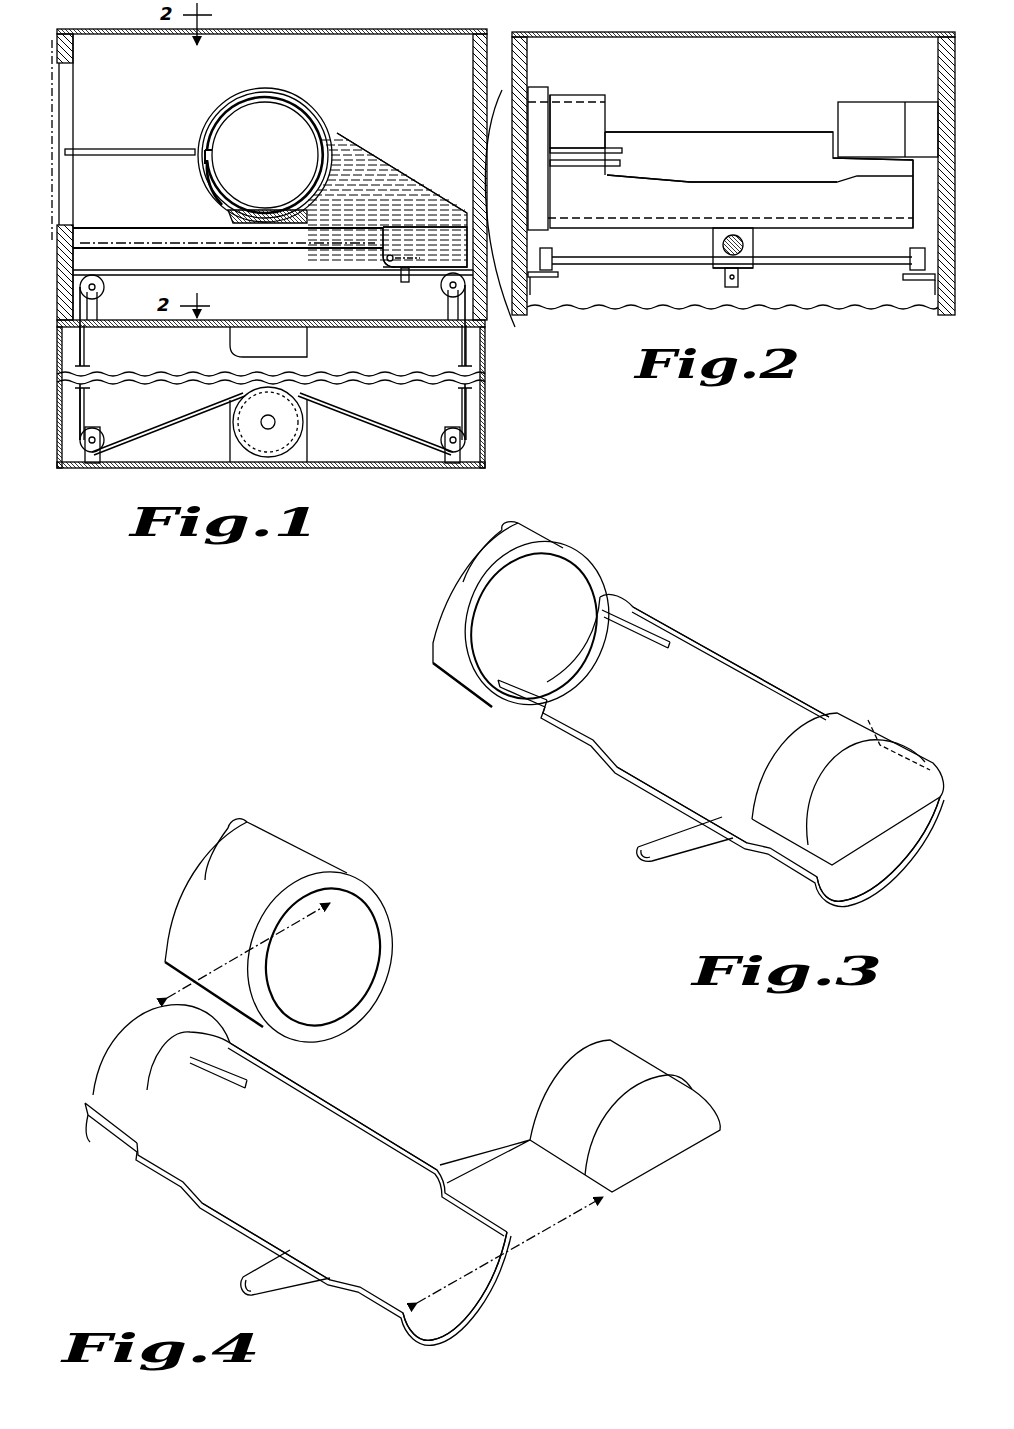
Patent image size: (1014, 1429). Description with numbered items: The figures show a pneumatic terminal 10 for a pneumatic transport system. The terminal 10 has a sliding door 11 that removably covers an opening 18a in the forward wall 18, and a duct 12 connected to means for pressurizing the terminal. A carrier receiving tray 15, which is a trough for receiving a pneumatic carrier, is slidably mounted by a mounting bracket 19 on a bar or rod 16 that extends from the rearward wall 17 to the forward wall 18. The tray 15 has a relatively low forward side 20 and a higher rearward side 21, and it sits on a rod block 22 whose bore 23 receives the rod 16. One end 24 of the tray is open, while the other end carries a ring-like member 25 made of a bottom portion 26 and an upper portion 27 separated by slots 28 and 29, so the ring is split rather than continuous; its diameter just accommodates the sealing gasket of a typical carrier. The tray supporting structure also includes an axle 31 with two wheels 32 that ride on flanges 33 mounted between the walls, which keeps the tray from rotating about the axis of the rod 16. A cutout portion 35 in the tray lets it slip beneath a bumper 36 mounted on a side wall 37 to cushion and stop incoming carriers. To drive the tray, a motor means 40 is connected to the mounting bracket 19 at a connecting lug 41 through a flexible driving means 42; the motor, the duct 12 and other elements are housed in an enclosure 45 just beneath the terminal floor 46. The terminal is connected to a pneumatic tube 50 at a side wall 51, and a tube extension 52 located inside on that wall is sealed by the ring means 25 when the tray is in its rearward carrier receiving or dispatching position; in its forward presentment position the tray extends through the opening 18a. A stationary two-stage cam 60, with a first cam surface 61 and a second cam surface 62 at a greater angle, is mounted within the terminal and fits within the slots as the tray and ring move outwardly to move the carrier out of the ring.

In FIG. 1, the pneumatic terminal 10 is at (400, 27).
In FIG. 2, the pneumatic terminal 10 is at (804, 27).
In FIG. 1, the sliding door 11 is at (55, 57).
In FIG. 1, the duct 12 is at (307, 338).
In FIG. 1, the carrier receiving tray 15 is at (229, 212).
In FIG. 2, the carrier receiving tray 15 is at (684, 208).
In FIG. 3, the carrier receiving tray 15 is at (743, 656).
In FIG. 4, the carrier receiving tray 15 is at (365, 1106).
In FIG. 1, the bar or rod 16 is at (172, 228).
In FIG. 2, the bar or rod 16 is at (753, 240).
In FIG. 3, the bar or rod 16 is at (675, 858).
In FIG. 4, the bar or rod 16 is at (473, 1153).
In FIG. 1, the rearward wall 17 is at (477, 70).
In FIG. 2, the rearward wall 17 is at (740, 72).
In FIG. 1, the forward wall 18 is at (67, 32).
In FIG. 1, the opening 18a is at (68, 88).
In FIG. 1, the mounting bracket 19 is at (394, 181).
In FIG. 1, the forward side 20 is at (206, 170).
In FIG. 2, the forward side 20 is at (744, 190).
In FIG. 3, the forward side 20 is at (621, 781).
In FIG. 4, the forward side 20 is at (198, 1213).
In FIG. 1, the rearward side 21 is at (333, 135).
In FIG. 2, the rearward side 21 is at (725, 132).
In FIG. 3, the rearward side 21 is at (713, 650).
In FIG. 4, the rearward side 21 is at (326, 1097).
In FIG. 1, the rod block 22 is at (378, 231).
In FIG. 2, the rod block 22 is at (748, 266).
In FIG. 2, the bore 23 is at (723, 245).
In FIG. 2, the open end 24 is at (912, 205).
In FIG. 3, the open end 24 is at (876, 873).
In FIG. 4, the open end 24 is at (461, 1307).
In FIG. 1, the ring-like member 25 is at (304, 100).
In FIG. 2, the ring-like member 25 is at (609, 93).
In FIG. 3, the ring-like member 25 is at (639, 583).
In FIG. 4, the ring-like member 25 is at (114, 1030).
In FIG. 1, the bottom portion 26 is at (220, 181).
In FIG. 2, the bottom portion 26 is at (577, 182).
In FIG. 3, the bottom portion 26 is at (533, 724).
In FIG. 4, the bottom portion 26 is at (97, 1137).
In FIG. 1, the upper portion 27 is at (222, 133).
In FIG. 2, the upper portion 27 is at (593, 127).
In FIG. 3, the upper portion 27 is at (559, 612).
In FIG. 4, the upper portion 27 is at (132, 1063).
In FIG. 1, the slot 28 is at (214, 157).
In FIG. 2, the slot 28 is at (600, 147).
In FIG. 3, the slot 28 is at (548, 675).
In FIG. 4, the slot 28 is at (85, 1108).
In FIG. 2, the slot 29 is at (617, 163).
In FIG. 3, the slot 29 is at (654, 655).
In FIG. 4, the slot 29 is at (228, 1078).
In FIG. 1, the axle 31 is at (389, 266).
In FIG. 2, the axle 31 is at (630, 265).
In FIG. 1, the wheels 32 is at (388, 259).
In FIG. 2, the wheels 32 is at (553, 251).
In FIG. 1, the flanges 33 is at (286, 265).
In FIG. 2, the flanges 33 is at (543, 278).
In FIG. 2, the cutout portion 35 is at (835, 162).
In FIG. 3, the cutout portion 35 is at (884, 731).
In FIG. 4, the cutout portion 35 is at (451, 1192).
In FIG. 2, the bumper 36 is at (888, 129).
In FIG. 3, the bumper 36 is at (848, 789).
In FIG. 4, the bumper 36 is at (568, 1171).
In FIG. 2, the side wall 37 is at (940, 78).
In FIG. 1, the motor means 40 is at (305, 447).
In FIG. 1, the connecting lug 41 is at (404, 284).
In FIG. 2, the connecting lug 41 is at (735, 284).
In FIG. 1, the flexible driving means 42 is at (137, 435).
In FIG. 2, the flexible driving means 42 is at (726, 280).
In FIG. 1, the enclosure 45 is at (384, 468).
In FIG. 1, the terminal floor 46 is at (193, 326).
In FIG. 1, the pneumatic tube 50 is at (265, 155).
In FIG. 2, the pneumatic tube 50 is at (528, 65).
In FIG. 3, the pneumatic tube 50 is at (567, 668).
In FIG. 4, the pneumatic tube 50 is at (270, 845).
In FIG. 2, the side wall 51 is at (503, 221).
In FIG. 1, the tube extension 52 is at (260, 89).
In FIG. 2, the tube extension 52 is at (548, 88).
In FIG. 3, the tube extension 52 is at (567, 552).
In FIG. 4, the tube extension 52 is at (370, 885).
In FIG. 1, the stationary two-stage cam 60 is at (128, 146).
In FIG. 1, the first cam surface 61 is at (170, 150).
In FIG. 1, the second cam surface 62 is at (90, 158).